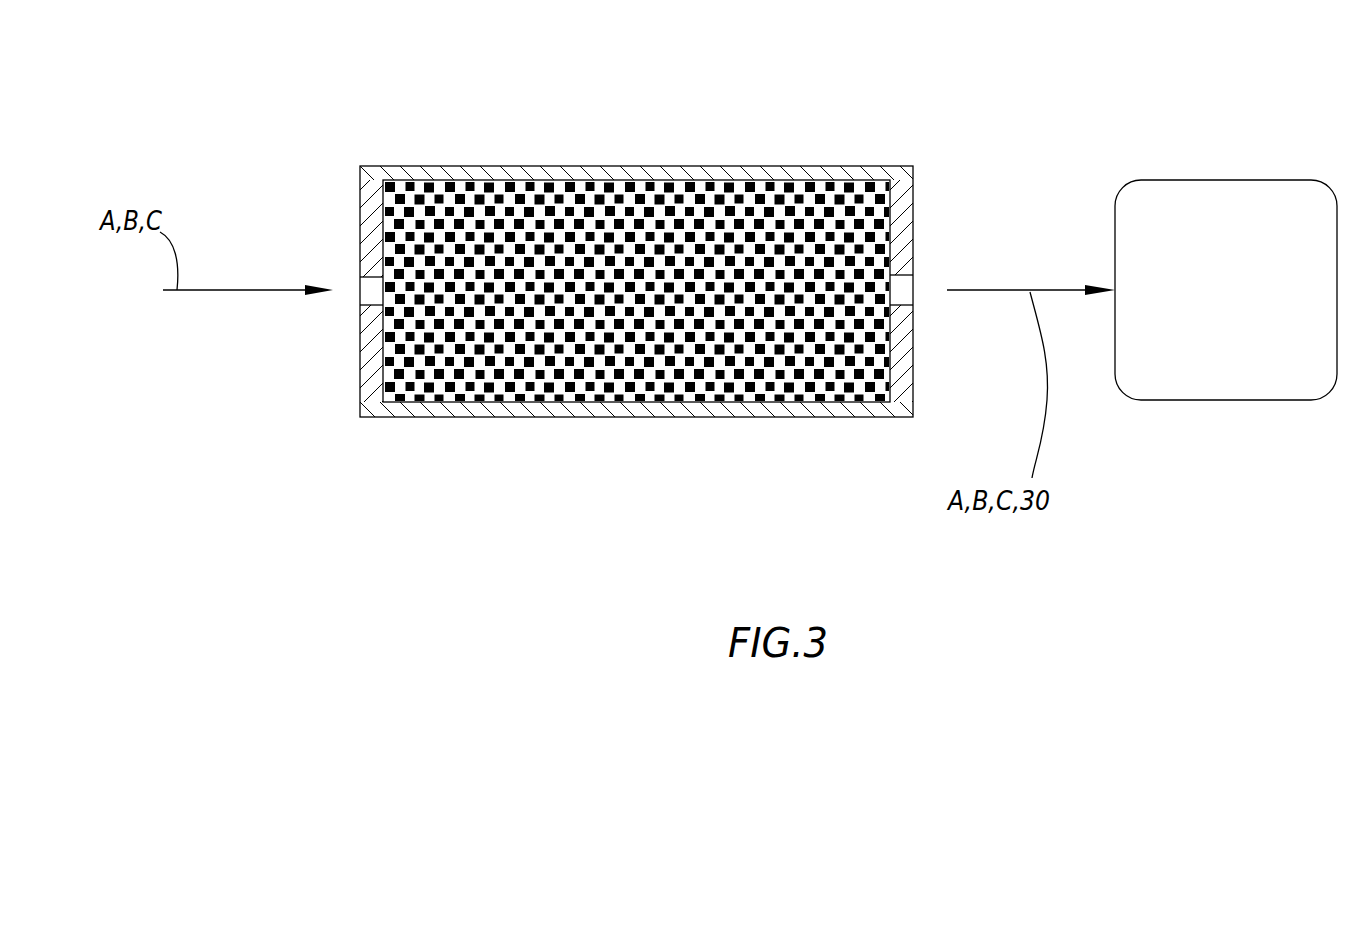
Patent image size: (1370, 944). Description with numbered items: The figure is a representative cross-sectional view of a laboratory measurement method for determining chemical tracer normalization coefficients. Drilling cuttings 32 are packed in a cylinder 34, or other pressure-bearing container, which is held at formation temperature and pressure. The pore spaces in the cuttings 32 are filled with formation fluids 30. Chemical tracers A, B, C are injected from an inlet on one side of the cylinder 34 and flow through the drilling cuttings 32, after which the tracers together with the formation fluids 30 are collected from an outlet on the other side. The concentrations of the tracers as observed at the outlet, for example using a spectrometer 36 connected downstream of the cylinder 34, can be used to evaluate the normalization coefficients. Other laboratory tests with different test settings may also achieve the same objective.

The formation fluids 30 is at (514, 186).
The drilling cuttings 32 is at (716, 385).
The cylinder 34 is at (728, 165).
The spectrometer 36 is at (1197, 180).